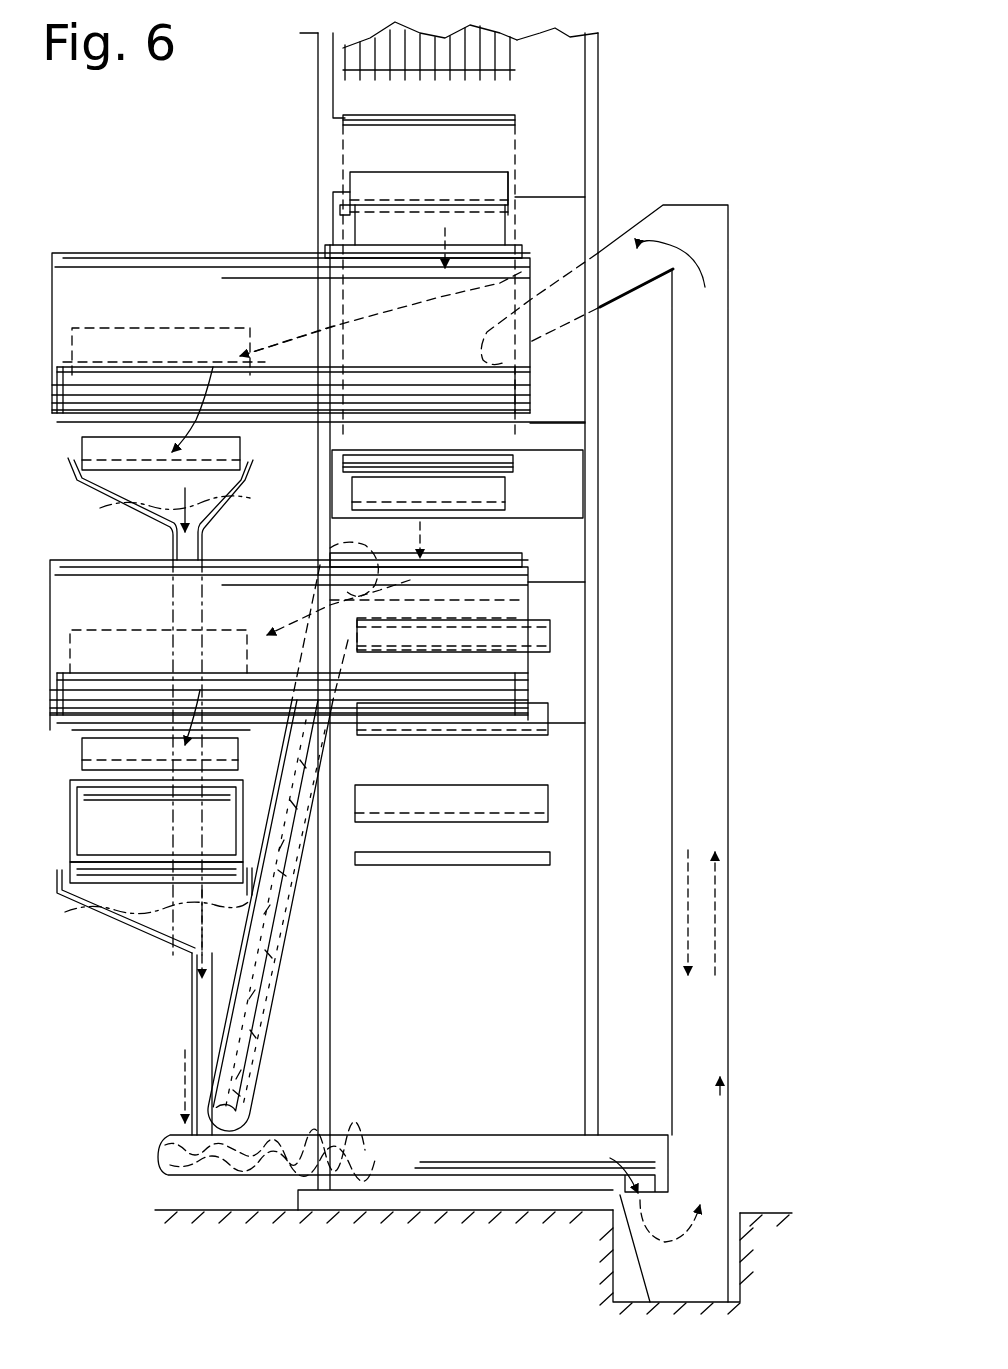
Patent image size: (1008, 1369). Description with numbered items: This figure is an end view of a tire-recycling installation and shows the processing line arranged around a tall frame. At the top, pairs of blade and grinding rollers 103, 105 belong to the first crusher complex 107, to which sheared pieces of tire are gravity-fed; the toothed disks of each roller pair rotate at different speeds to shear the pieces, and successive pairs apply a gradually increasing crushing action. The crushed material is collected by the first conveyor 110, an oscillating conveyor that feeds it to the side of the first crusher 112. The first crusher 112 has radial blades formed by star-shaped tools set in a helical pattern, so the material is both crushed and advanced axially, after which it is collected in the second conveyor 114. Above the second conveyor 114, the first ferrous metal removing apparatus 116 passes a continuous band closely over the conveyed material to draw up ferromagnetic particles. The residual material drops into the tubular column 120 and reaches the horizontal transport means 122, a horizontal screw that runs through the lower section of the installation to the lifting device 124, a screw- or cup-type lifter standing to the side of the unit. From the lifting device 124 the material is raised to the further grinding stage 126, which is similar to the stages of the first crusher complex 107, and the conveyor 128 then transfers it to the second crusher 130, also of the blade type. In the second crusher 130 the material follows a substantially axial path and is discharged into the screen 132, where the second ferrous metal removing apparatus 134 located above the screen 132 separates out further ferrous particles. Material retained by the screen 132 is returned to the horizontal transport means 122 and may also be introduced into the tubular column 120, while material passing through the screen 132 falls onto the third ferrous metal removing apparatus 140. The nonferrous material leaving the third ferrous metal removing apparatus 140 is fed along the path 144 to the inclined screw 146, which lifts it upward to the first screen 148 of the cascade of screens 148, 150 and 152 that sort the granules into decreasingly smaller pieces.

The pair of blade and grinding rollers 103 is at (343, 60).
The pair of blade and grinding rollers 105 is at (343, 140).
The first crusher complex 107 is at (612, 141).
The first conveyor 110 is at (340, 178).
The first crusher 112 is at (150, 266).
The second conveyor 114 is at (222, 455).
The first ferrous metal removing apparatus 116 is at (155, 326).
The tubular column 120 is at (142, 510).
The horizontal transport means 122 is at (415, 1135).
The lifting device 124 is at (725, 1098).
The further grinding stage 126 is at (513, 463).
The conveyor 128 is at (488, 500).
The second crusher 130 is at (498, 566).
The screen 132 is at (88, 753).
The second ferrous metal removing apparatus 134 is at (128, 626).
The third ferrous metal removing apparatus 140 is at (90, 828).
The path 144 is at (215, 993).
The inclined screw 146 is at (270, 1012).
The first screen 148 is at (553, 640).
The screen 150 is at (548, 725).
The screen 152 is at (548, 808).